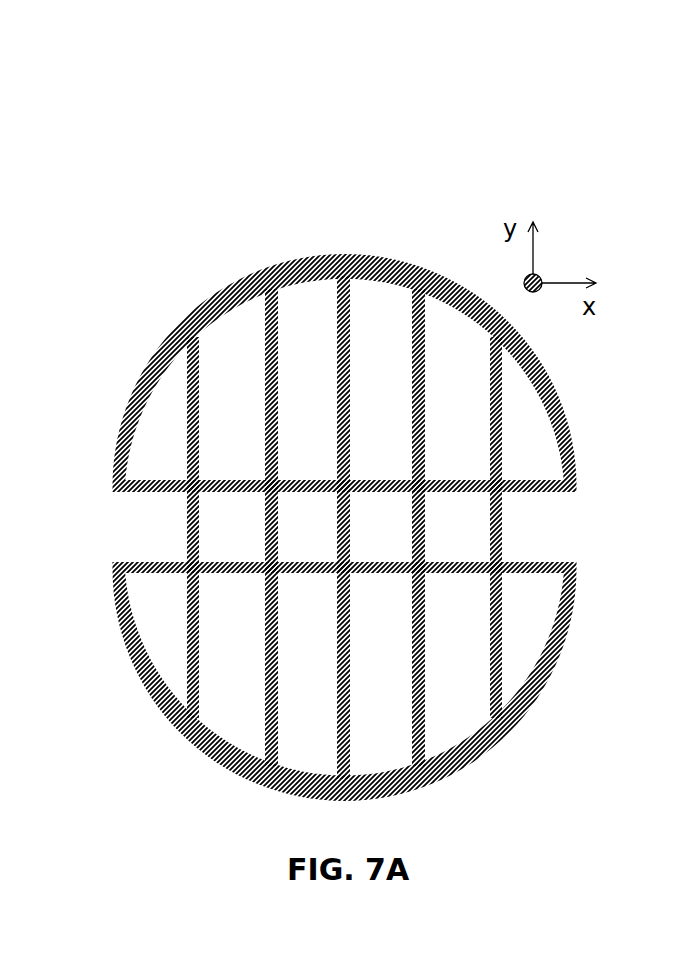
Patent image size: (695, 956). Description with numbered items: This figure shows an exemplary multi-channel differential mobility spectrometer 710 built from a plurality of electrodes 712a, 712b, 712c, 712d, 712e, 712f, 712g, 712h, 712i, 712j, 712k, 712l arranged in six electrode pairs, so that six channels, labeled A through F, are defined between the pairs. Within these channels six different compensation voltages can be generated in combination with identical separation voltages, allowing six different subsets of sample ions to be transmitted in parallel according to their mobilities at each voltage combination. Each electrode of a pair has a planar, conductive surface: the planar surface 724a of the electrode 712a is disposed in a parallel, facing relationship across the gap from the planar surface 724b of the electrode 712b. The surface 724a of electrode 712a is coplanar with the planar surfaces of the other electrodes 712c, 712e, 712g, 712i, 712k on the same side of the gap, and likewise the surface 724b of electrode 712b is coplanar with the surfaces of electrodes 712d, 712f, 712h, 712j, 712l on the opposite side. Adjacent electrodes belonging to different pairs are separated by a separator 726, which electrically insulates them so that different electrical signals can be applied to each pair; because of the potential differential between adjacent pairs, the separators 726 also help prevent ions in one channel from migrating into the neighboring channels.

The multi-channel differential mobility spectrometer 710 is at (260, 165).
The electrode 712a is at (158, 407).
The electrode 712b is at (168, 652).
The electrode 712c is at (232, 322).
The electrode 712d is at (235, 713).
The electrode 712e is at (308, 302).
The electrode 712f is at (313, 737).
The electrode 712g is at (375, 300).
The electrode 712h is at (380, 737).
The electrode 712i is at (437, 323).
The electrode 712j is at (452, 710).
The electrode 712k is at (522, 397).
The electrode 712l is at (520, 645).
The planar conductive surface 724a is at (133, 492).
The planar conductive surface 724b is at (132, 562).
The separator 726 is at (273, 415).